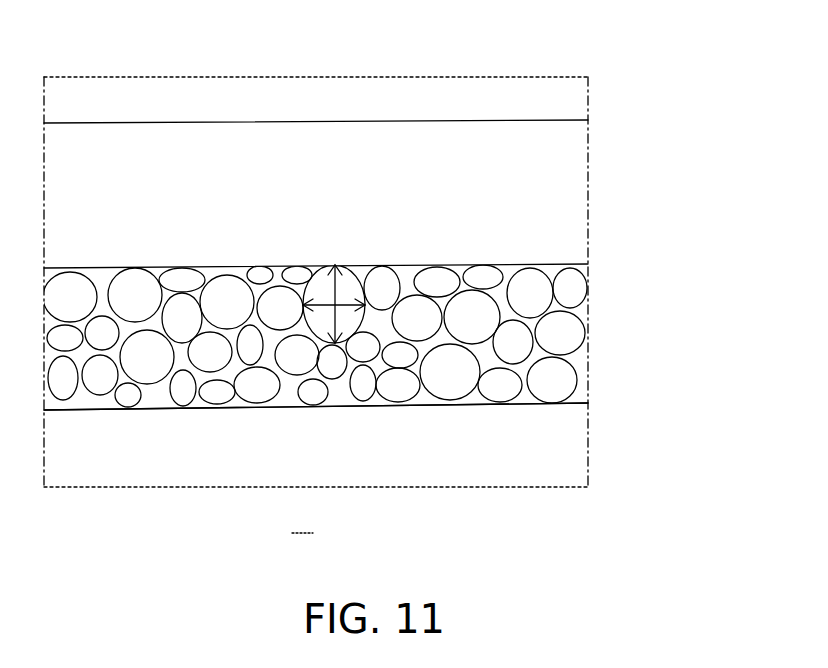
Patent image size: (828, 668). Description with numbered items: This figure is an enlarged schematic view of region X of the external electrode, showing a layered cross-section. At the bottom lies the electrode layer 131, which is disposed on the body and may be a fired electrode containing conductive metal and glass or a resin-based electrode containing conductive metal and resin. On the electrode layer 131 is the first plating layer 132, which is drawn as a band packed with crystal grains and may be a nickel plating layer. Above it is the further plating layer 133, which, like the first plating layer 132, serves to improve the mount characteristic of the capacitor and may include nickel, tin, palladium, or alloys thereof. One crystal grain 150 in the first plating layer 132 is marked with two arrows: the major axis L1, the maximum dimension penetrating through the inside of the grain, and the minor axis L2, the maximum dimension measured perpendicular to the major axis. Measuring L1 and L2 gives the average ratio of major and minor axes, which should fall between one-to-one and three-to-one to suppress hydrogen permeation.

The crystal grain 150 is at (305, 275).
The plating layer 133 is at (565, 190).
The first plating layer 132 is at (580, 361).
The electrode layer 131 is at (567, 443).
The major axis L1 is at (335, 265).
The minor axis L2 is at (327, 328).
The region X is at (302, 522).